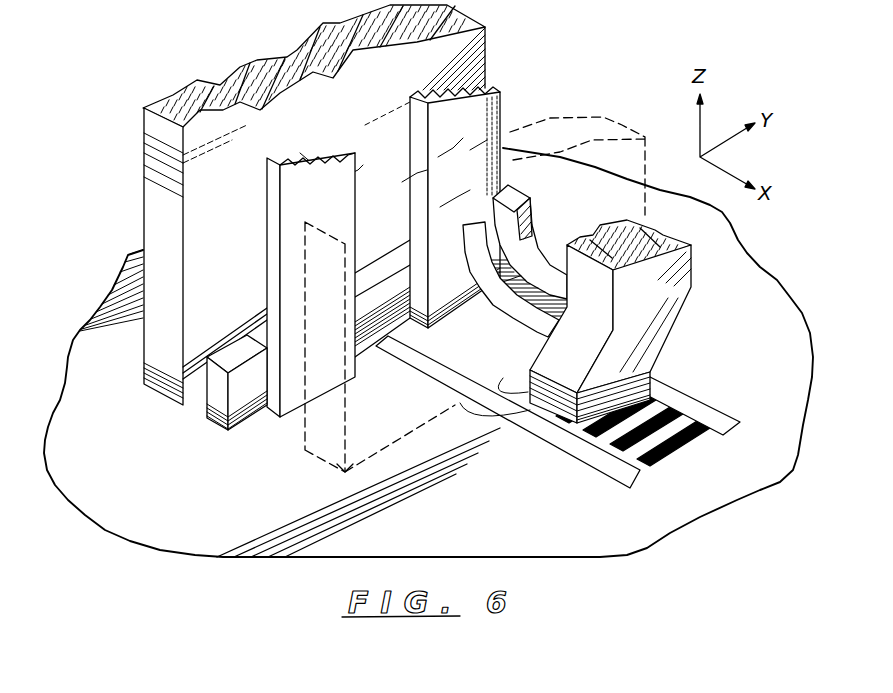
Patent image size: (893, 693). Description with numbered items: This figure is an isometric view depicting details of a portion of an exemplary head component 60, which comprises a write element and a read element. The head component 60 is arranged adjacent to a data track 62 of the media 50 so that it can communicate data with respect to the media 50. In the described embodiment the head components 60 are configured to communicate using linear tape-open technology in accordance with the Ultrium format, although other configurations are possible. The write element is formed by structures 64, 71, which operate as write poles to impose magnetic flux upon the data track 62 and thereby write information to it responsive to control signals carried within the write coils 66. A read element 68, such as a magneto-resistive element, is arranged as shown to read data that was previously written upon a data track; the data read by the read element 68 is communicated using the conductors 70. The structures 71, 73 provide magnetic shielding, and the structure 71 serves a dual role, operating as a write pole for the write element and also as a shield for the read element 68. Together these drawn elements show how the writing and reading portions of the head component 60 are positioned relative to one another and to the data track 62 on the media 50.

The media 50 is at (500, 507).
The head component 60 is at (196, 537).
The data track 62 is at (703, 390).
The structure 64 is at (652, 305).
The write coils 66 is at (483, 288).
The read element 68 is at (221, 402).
The conductors 70 is at (412, 158).
The structure 71 is at (308, 462).
The structure 73 is at (158, 205).